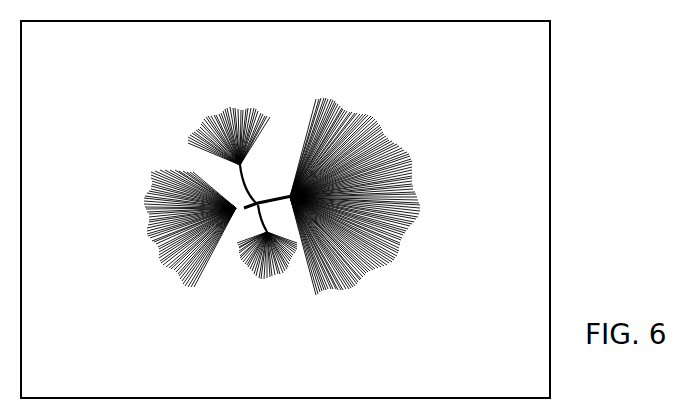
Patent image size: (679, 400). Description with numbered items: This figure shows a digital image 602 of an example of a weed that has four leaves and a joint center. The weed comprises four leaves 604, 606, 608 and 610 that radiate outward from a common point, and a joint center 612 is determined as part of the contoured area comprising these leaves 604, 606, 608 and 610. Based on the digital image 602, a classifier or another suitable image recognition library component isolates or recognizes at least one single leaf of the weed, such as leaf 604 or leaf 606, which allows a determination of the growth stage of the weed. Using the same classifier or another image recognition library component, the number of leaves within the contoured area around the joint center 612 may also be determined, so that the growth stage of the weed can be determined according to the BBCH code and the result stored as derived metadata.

The digital image 602 is at (533, 60).
The leaf 604 is at (423, 198).
The leaf 606 is at (212, 128).
The leaf 608 is at (158, 203).
The leaf 610 is at (268, 271).
The joint center 612 is at (251, 206).